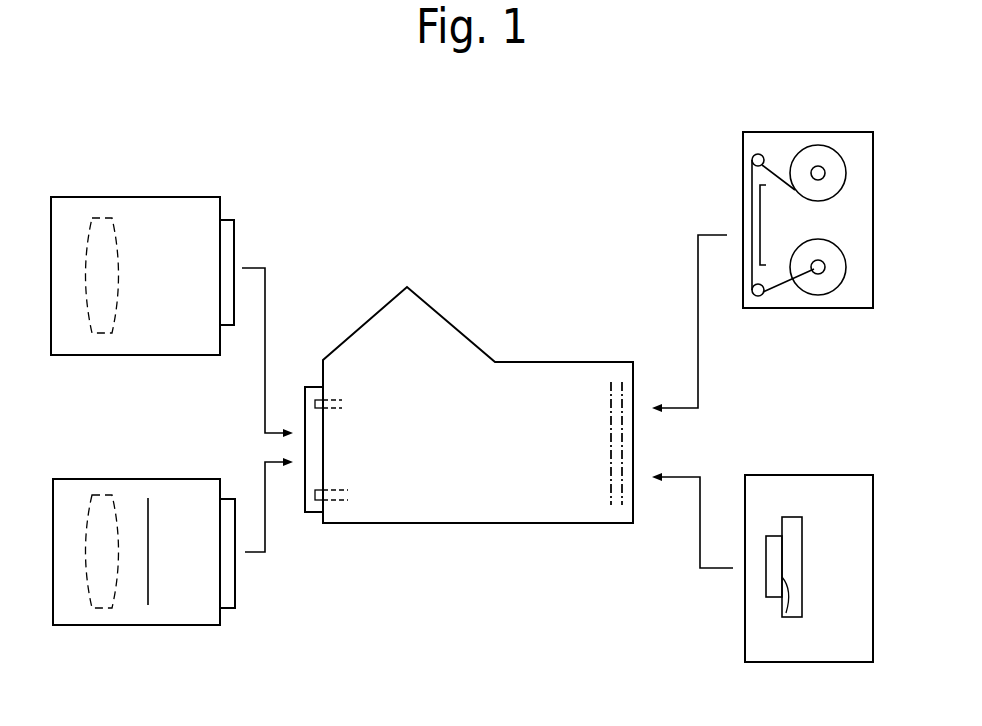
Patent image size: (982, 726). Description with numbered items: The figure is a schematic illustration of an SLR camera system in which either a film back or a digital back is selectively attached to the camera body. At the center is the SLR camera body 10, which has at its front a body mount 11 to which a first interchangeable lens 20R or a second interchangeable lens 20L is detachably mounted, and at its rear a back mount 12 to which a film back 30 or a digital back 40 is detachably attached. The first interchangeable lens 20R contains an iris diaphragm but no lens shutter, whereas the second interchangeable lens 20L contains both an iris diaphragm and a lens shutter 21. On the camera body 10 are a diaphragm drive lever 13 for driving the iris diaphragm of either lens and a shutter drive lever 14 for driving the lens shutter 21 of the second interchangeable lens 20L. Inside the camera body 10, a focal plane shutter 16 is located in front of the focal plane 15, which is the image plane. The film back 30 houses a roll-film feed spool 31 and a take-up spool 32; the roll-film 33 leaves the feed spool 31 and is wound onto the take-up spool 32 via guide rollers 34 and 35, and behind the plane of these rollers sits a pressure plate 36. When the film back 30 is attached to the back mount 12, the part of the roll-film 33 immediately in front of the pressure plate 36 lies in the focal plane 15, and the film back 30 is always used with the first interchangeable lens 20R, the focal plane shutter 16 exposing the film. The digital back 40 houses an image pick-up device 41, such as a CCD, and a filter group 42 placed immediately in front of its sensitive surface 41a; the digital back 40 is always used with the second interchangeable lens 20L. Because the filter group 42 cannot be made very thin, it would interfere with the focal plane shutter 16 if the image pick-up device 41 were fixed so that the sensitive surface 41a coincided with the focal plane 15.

The SLR camera body 10 is at (483, 328).
The body mount 11 is at (305, 500).
The back mount 12 is at (633, 500).
The diaphragm drive lever 13 is at (327, 404).
The shutter drive lever 14 is at (345, 500).
The focal plane 15 is at (622, 385).
The focal plane shutter 16 is at (611, 415).
The first interchangeable lens 20R is at (155, 210).
The second interchangeable lens 20L is at (185, 615).
The lens shutter 21 is at (145, 595).
The film back 30 is at (737, 129).
The roll-film feed spool 31 is at (820, 165).
The take-up spool 32 is at (823, 273).
The roll-film 33 is at (781, 178).
The guide roller 34 is at (752, 160).
The guide roller 35 is at (758, 296).
The pressure plate 36 is at (776, 221).
The digital back 40 is at (736, 644).
The image pick-up device 41 is at (802, 617).
The sensitive surface 41a is at (785, 613).
The filter group 42 is at (772, 597).